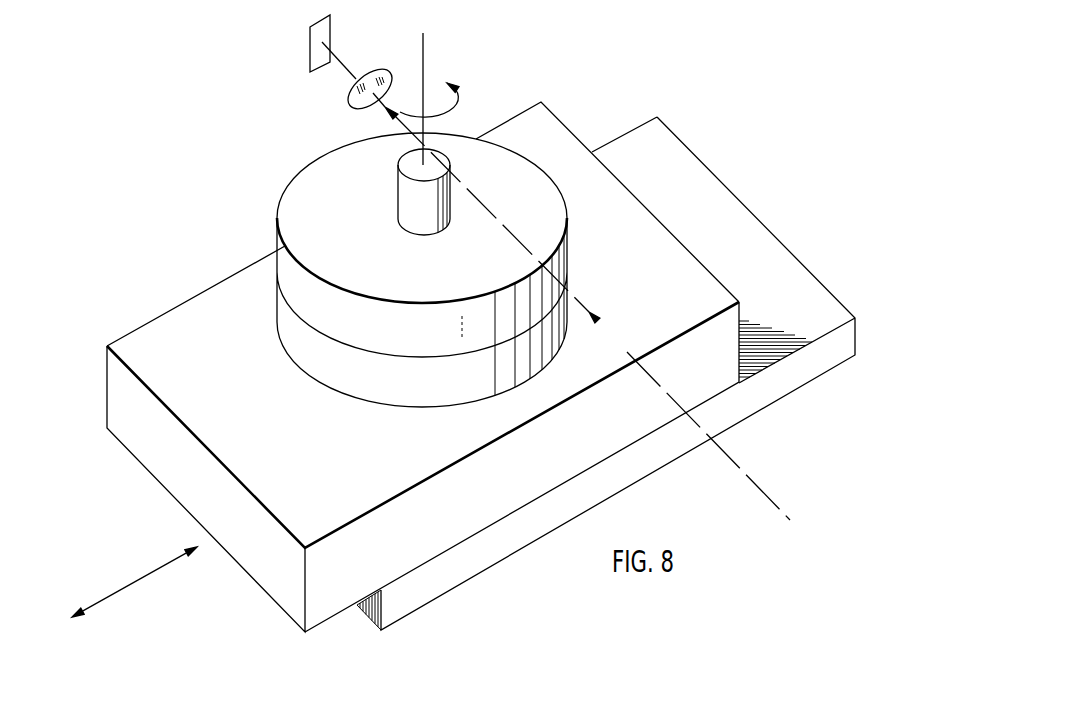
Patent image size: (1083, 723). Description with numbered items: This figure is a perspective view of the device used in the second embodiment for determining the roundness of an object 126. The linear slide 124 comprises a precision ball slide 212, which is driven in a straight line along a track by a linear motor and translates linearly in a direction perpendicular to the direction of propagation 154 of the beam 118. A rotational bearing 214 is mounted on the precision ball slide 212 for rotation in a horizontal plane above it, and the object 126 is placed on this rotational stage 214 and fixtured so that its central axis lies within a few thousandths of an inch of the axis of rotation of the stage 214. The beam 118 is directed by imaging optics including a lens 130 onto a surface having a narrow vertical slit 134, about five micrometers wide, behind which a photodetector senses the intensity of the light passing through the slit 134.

The propagated beam 118 is at (362, 51).
The linear slide 124 is at (101, 389).
The object 126 is at (403, 167).
The lens 130 is at (348, 97).
The narrow vertical slit 134 is at (310, 42).
The direction of propagation 154 is at (727, 453).
The precision ball slide 212 is at (158, 457).
The rotational bearing 214 is at (300, 288).